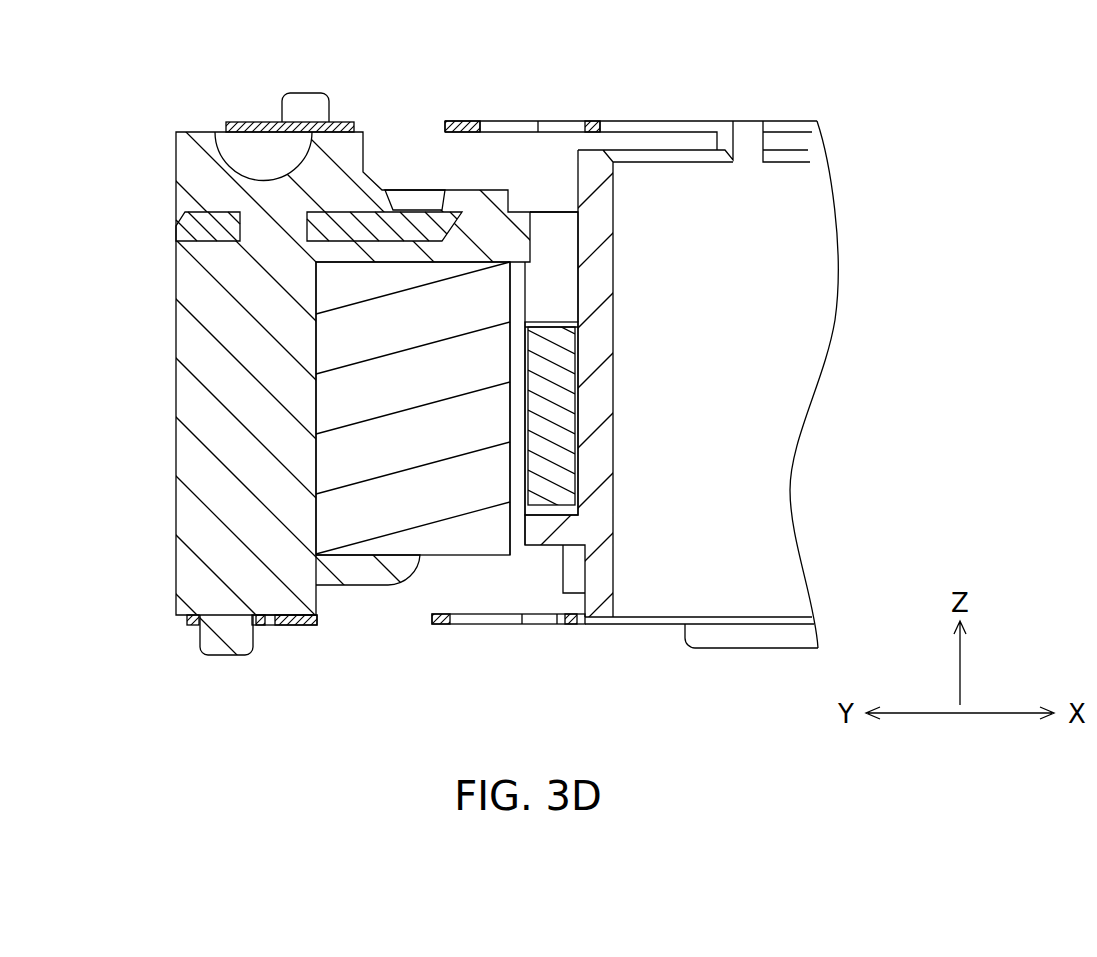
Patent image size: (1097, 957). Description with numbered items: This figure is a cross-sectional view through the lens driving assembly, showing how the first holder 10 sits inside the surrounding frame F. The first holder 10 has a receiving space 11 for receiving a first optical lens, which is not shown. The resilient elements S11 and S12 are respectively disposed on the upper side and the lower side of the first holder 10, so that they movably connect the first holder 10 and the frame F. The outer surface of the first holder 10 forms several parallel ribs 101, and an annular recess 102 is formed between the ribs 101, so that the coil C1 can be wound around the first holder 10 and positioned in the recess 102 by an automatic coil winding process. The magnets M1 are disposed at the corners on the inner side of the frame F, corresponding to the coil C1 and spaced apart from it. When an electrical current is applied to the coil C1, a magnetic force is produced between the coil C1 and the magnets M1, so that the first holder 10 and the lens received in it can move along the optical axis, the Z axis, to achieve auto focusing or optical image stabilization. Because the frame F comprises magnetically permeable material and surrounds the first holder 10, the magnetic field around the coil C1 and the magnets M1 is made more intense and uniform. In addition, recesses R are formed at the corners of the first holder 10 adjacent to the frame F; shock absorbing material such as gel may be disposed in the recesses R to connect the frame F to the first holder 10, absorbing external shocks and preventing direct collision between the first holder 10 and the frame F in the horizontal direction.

The frame F is at (215, 437).
The magnet M1 is at (395, 505).
The resilient element S11 is at (238, 122).
The resilient element S12 is at (300, 627).
The annular recess 102 is at (550, 330).
The coil C1 is at (550, 424).
The first holder 10 is at (614, 136).
The rib 101 is at (553, 208).
The recess R is at (553, 240).
The receiving space 11 is at (668, 203).